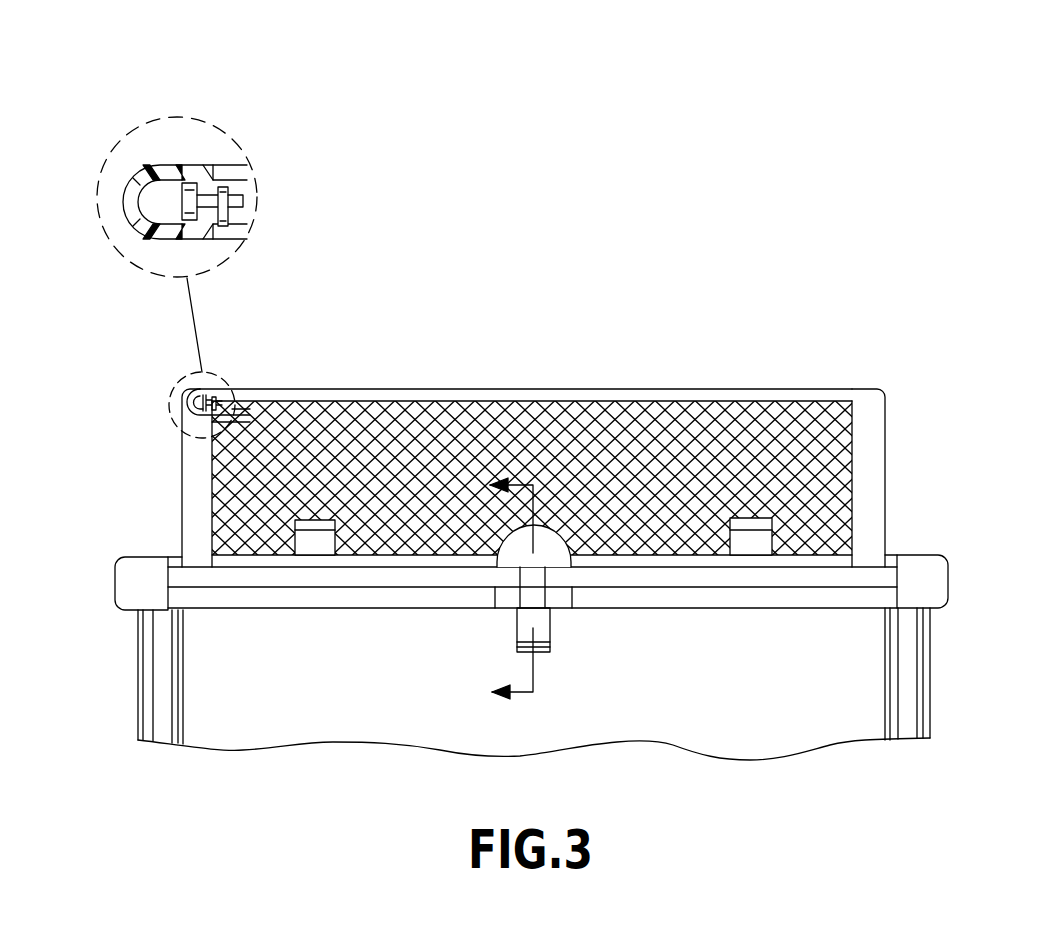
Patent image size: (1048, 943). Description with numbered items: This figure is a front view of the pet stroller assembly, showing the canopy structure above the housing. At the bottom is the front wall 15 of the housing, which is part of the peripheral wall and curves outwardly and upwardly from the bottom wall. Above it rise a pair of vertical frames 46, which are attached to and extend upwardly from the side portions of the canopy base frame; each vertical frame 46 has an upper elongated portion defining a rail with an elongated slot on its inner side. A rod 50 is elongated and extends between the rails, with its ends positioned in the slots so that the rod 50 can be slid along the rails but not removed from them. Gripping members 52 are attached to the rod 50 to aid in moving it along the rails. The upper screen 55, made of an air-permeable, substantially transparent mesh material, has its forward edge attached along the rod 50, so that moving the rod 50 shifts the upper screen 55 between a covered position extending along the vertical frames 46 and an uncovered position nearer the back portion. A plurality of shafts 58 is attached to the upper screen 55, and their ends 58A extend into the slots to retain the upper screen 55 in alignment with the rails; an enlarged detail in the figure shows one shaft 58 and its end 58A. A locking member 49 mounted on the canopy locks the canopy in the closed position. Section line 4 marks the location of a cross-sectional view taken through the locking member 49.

The front wall 15 is at (288, 693).
The vertical frames 46 is at (178, 485).
The locking member 49 is at (550, 630).
The rod 50 is at (655, 560).
The gripping member 52 is at (313, 530).
The upper screen 55 is at (395, 417).
The shafts 58 is at (247, 207).
The ends of shafts 58A is at (133, 198).
The section line 4- 4 is at (498, 593).